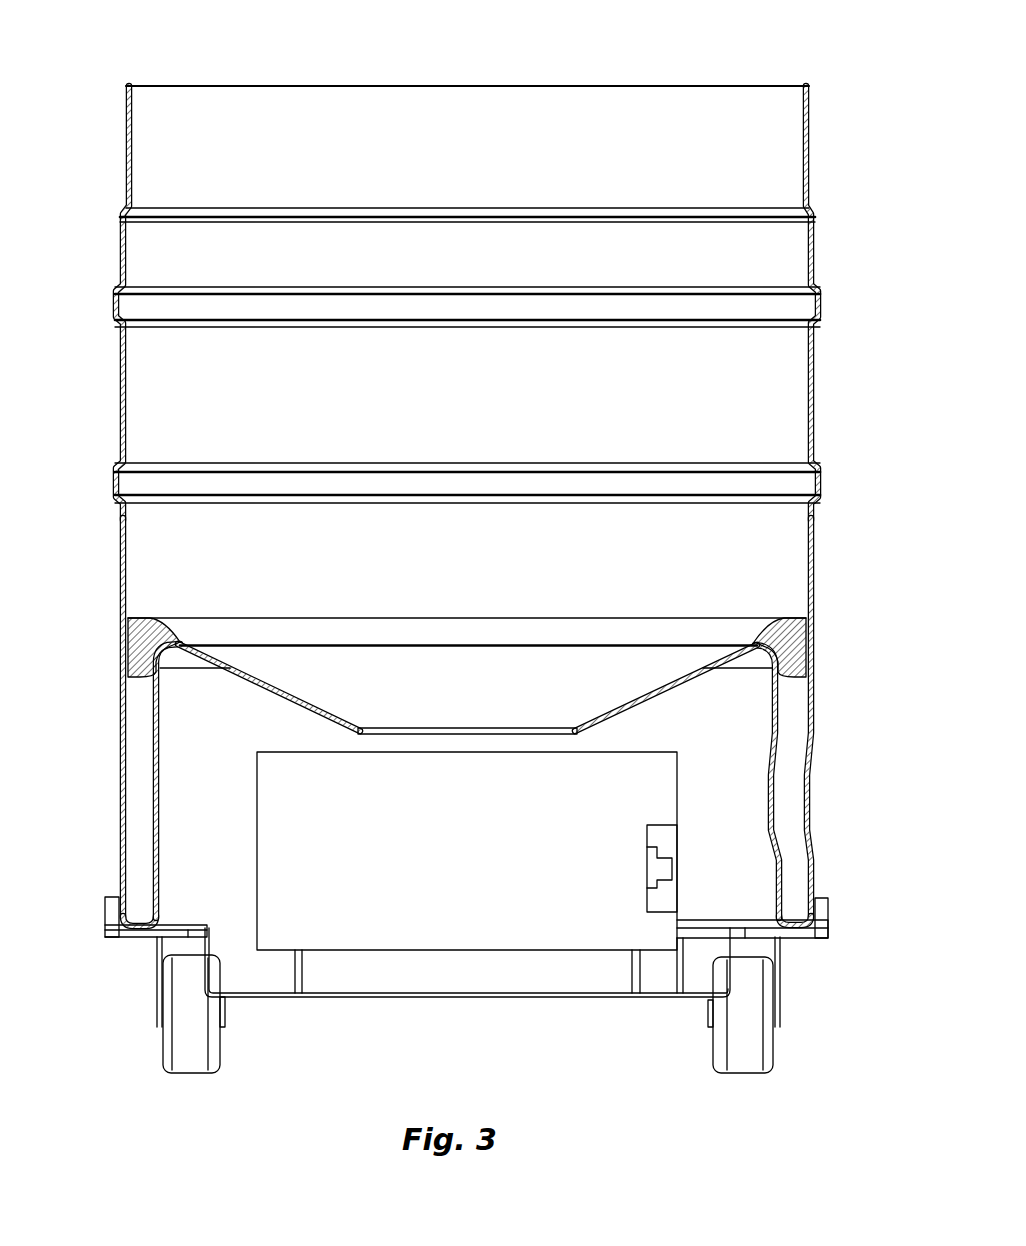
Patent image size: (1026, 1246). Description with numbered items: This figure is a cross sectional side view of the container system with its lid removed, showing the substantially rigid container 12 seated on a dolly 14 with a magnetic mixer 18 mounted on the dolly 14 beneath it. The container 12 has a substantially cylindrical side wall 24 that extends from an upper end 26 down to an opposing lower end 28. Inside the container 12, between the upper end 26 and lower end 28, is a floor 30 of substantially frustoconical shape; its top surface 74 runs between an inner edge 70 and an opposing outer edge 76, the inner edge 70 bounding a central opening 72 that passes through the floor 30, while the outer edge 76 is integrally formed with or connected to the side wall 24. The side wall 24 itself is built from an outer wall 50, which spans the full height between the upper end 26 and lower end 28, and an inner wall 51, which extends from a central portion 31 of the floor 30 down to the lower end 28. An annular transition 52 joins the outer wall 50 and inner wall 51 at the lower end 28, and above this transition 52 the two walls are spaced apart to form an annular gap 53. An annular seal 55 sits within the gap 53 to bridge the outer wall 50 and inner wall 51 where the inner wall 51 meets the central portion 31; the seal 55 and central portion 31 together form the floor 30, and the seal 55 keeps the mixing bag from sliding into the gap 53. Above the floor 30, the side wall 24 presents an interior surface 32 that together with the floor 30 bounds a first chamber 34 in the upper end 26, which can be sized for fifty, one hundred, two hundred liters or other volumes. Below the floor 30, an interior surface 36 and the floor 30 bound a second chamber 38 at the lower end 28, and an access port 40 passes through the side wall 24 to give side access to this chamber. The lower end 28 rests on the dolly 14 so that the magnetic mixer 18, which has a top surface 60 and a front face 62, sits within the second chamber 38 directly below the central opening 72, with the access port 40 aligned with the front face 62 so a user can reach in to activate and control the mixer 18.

The container 12 is at (811, 382).
The dolly 14 is at (708, 970).
The magnetic mixer 18 is at (413, 937).
The side wall 24 is at (811, 518).
The upper end 26 is at (810, 153).
The lower end 28 is at (814, 888).
The floor 30 is at (757, 647).
The central portion 31 is at (283, 693).
The interior surface 32 is at (803, 268).
The first chamber 34 is at (661, 117).
The interior surface 36 is at (160, 848).
The second chamber 38 is at (188, 790).
The access port 40 is at (809, 818).
The outer wall 50 is at (120, 528).
The inner wall 51 is at (156, 806).
The annular transition 52 is at (138, 918).
The annular gap 53 is at (140, 742).
The annular seal 55 is at (128, 633).
The top surface 60 is at (160, 706).
The front face 62 is at (680, 784).
The inner edge 70 is at (582, 730).
The central opening 72 is at (448, 730).
The top surface 74 is at (672, 680).
The outer edge 76 is at (138, 618).